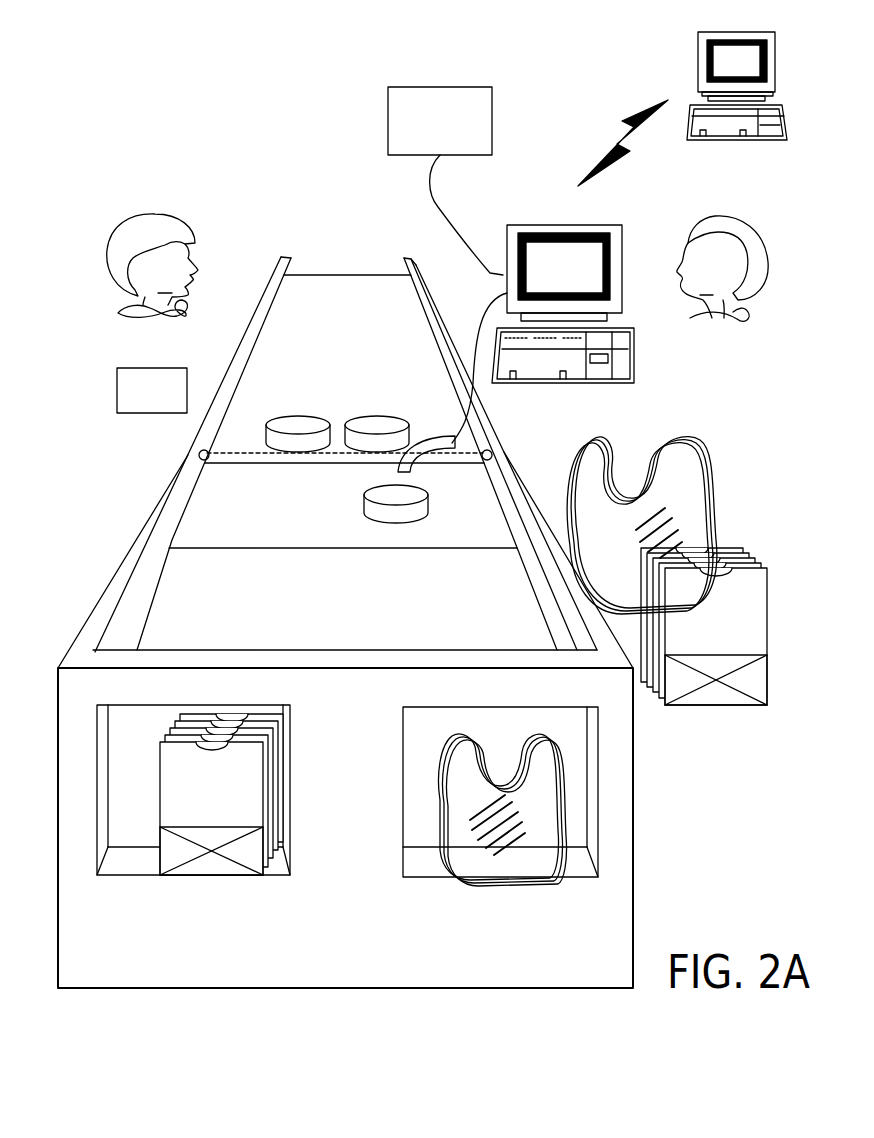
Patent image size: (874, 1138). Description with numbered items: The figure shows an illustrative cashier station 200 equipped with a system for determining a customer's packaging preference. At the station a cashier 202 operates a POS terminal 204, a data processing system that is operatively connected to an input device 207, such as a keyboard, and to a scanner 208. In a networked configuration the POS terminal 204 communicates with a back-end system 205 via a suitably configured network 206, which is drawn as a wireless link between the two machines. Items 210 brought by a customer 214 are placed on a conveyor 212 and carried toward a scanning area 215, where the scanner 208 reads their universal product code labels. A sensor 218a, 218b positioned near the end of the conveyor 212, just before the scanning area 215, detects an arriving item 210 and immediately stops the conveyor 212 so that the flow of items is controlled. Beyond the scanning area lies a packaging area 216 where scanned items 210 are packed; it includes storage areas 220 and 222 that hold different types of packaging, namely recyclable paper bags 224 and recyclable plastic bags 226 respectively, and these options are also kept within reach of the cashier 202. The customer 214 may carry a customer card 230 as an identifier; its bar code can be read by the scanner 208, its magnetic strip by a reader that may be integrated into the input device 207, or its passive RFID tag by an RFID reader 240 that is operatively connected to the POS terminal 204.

The cashier station 200 is at (441, 1062).
The cashier 202 is at (760, 237).
The POS terminal 204 is at (625, 270).
The back-end system 205 is at (698, 65).
The network 206 is at (615, 128).
The input device 207 is at (636, 352).
The scanner 208 is at (428, 436).
The items 210 is at (378, 487).
The conveyor 212 is at (314, 290).
The customer 214 is at (108, 256).
The scanning area 215 is at (203, 523).
The packaging area 216 is at (186, 616).
The sensor 218a is at (199, 453).
The sensor 218b is at (493, 453).
The storage area 220 is at (122, 860).
The storage area 222 is at (578, 860).
The recyclable paper bags 224 is at (207, 867).
The recyclable plastic bags 226 is at (490, 860).
The customer card 230 is at (116, 390).
The RFID reader 240 is at (388, 120).